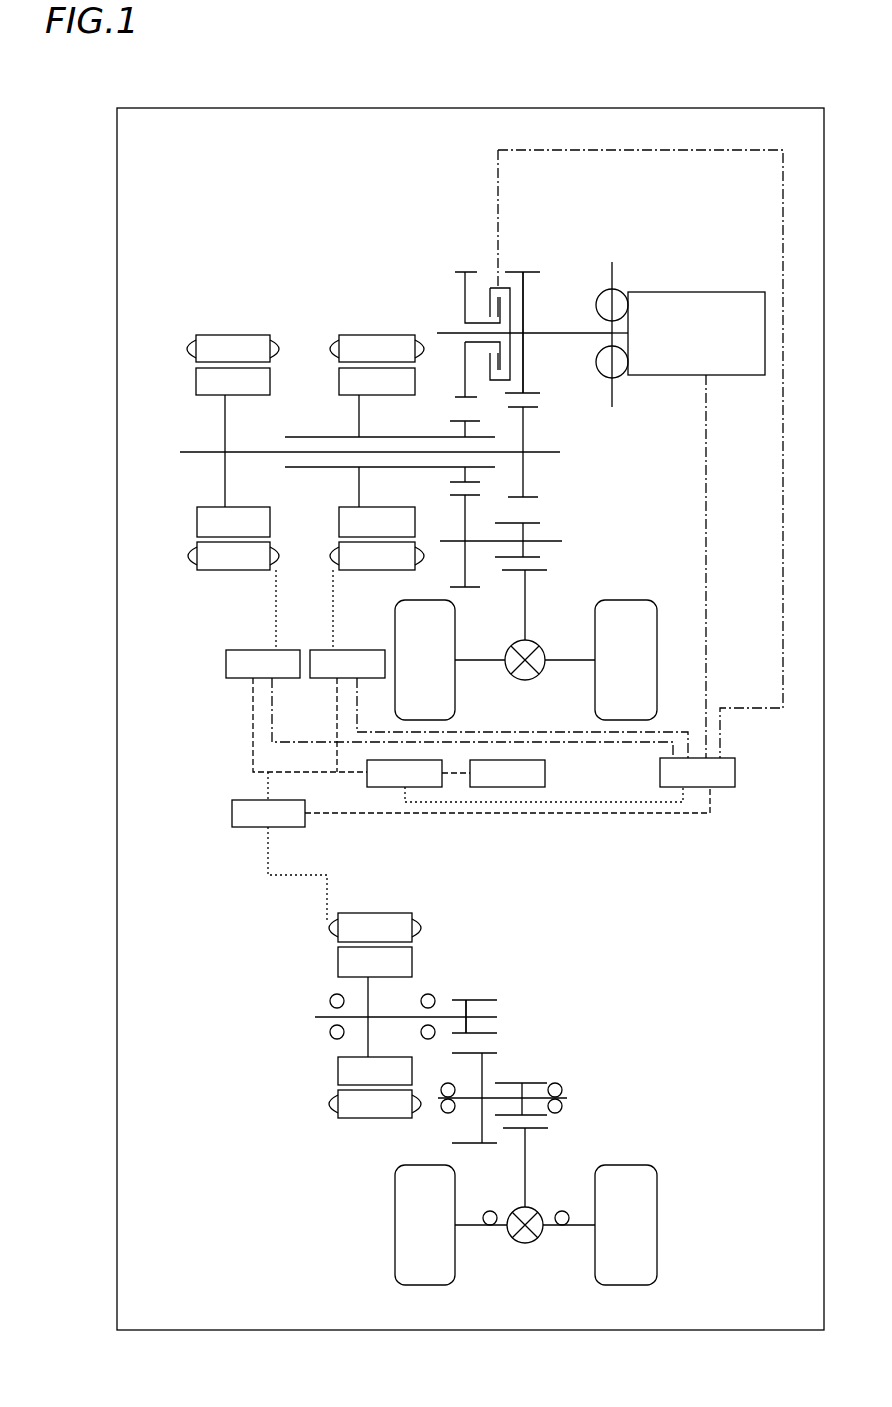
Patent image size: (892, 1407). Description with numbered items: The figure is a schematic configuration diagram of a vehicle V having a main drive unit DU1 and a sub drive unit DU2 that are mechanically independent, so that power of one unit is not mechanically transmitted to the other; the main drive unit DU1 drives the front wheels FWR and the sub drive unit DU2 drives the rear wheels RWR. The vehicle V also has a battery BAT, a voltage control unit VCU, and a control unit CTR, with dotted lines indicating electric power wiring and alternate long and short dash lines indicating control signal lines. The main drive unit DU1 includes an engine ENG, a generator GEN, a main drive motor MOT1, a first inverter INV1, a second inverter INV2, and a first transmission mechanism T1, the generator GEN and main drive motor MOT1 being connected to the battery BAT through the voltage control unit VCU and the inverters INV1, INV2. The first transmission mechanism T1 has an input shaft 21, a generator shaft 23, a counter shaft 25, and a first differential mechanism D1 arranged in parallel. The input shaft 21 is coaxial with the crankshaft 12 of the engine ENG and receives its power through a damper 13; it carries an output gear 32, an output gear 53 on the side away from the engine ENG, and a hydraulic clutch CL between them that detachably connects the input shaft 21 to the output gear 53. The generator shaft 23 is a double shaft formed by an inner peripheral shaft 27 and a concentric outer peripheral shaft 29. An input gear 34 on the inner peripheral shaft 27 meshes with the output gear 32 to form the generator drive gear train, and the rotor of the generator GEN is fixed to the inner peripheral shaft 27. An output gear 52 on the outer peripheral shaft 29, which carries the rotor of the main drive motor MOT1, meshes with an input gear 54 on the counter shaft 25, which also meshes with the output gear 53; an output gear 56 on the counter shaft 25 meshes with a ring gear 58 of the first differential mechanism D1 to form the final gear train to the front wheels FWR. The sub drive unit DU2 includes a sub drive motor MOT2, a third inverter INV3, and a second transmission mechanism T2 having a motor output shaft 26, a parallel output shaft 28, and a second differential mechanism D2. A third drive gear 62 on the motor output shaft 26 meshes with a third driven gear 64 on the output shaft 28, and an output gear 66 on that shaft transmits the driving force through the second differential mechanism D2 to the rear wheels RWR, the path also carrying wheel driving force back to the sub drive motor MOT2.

The vehicle V is at (746, 108).
The main drive unit DU1 is at (443, 186).
The sub drive unit DU2 is at (468, 930).
The engine ENG is at (696, 525).
The crankshaft 12 is at (625, 330).
The damper 13 is at (602, 298).
The input shaft 21 is at (562, 331).
The output gear 53 is at (462, 271).
The hydraulic clutch CL is at (485, 287).
The output gear 32 is at (512, 270).
The first transmission mechanism T1 is at (532, 269).
The input gear 34 is at (540, 410).
The outer peripheral shaft 29 is at (385, 435).
The generator shaft 23 is at (188, 454).
The inner peripheral shaft 27 is at (505, 460).
The output gear 52 is at (470, 420).
The input gear 54 is at (458, 588).
The output gear 56 is at (530, 525).
The counter shaft 25 is at (555, 541).
The ring gear 58 is at (545, 570).
The first differential mechanism D1 is at (535, 642).
The front wheels FWR is at (526, 660).
The generator GEN is at (229, 331).
The main drive motor MOT1 is at (369, 331).
The sub drive motor MOT2 is at (371, 912).
The first inverter INV1 is at (449, 671).
The second inverter INV2 is at (499, 671).
The third inverter INV3 is at (471, 846).
The voltage control unit VCU is at (525, 781).
The battery BAT is at (507, 773).
The control unit CTR is at (697, 772).
The motor output shaft 26 is at (485, 1015).
The third drive gear 62 is at (472, 999).
The second transmission mechanism T2 is at (487, 998).
The third driven gear 64 is at (475, 1143).
The output gear 66 is at (532, 1082).
The output shaft 28 is at (542, 1100).
The second differential mechanism D2 is at (525, 1244).
The rear wheels RWR is at (526, 1225).